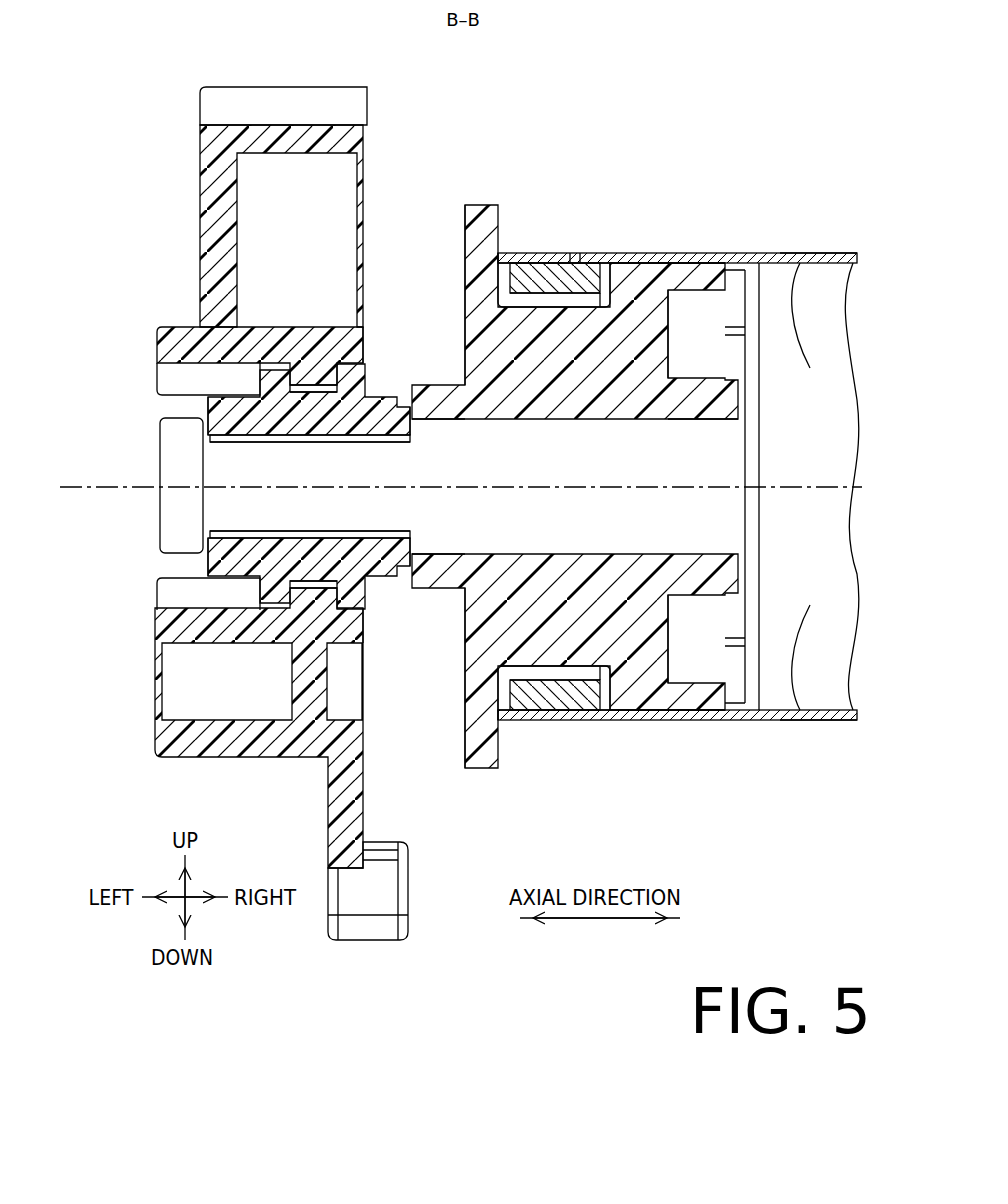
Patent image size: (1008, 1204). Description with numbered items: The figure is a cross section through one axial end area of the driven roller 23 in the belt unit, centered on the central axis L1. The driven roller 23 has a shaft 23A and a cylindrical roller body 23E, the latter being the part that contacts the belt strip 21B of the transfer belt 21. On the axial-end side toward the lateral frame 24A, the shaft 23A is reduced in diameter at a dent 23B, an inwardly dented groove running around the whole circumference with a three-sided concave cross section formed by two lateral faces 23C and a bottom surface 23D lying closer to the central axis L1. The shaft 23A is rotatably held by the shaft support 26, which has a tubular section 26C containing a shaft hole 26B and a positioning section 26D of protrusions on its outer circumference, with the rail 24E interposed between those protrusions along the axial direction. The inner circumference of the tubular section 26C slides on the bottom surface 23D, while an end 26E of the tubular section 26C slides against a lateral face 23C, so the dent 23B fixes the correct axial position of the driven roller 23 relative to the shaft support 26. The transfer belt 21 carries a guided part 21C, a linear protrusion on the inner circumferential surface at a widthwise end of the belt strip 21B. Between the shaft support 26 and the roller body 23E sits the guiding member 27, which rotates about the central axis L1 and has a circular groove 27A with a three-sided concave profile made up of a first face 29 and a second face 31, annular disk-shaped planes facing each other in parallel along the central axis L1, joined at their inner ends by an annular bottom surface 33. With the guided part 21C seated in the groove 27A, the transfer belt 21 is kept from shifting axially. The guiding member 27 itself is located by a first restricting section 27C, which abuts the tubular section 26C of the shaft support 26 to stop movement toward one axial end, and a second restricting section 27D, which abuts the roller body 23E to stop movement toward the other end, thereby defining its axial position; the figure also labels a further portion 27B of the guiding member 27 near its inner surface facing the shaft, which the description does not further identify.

The transfer belt 21 is at (825, 250).
The belt strip 21B is at (748, 270).
The guided part 21C is at (600, 288).
The driven roller 23 is at (826, 722).
The shaft 23A is at (574, 255).
The dent 23B is at (527, 262).
The lateral face 23C is at (207, 447).
The bottom surface 23D is at (235, 396).
The roller body 23E is at (802, 262).
The lateral frame 24A is at (200, 237).
The rail 24E is at (380, 382).
The shaft support 26 is at (158, 334).
The shaft hole 26B is at (300, 456).
The tubular section 26C is at (300, 443).
The positioning section 26D is at (300, 345).
The end of the tubular section 26E is at (207, 410).
The guiding member 27 is at (707, 250).
The groove 27A is at (630, 293).
The inner peripheral surface of hub 27B is at (678, 421).
The first restricting section 27C is at (413, 385).
The second restricting section 27D is at (740, 398).
The first face 29 is at (498, 236).
The second face 31 is at (585, 300).
The bottom surface 33 is at (556, 285).
The central axis L1 is at (598, 481).